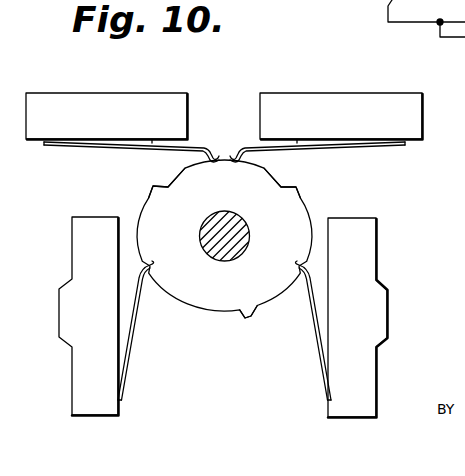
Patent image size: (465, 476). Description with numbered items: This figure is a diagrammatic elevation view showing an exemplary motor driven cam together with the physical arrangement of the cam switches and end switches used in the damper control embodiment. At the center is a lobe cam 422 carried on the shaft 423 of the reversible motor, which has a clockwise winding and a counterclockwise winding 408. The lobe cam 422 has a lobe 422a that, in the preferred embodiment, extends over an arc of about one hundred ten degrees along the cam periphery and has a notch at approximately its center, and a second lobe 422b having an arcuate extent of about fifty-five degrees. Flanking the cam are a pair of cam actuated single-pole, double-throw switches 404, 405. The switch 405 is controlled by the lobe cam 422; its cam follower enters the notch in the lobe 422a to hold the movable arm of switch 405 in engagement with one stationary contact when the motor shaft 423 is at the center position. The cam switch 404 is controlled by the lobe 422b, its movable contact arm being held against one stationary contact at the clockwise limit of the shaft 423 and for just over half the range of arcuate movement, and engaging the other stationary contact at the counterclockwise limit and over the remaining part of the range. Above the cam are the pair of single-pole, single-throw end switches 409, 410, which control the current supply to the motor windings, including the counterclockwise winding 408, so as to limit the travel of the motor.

The cam actuated single-pole, double-throw switch 404 is at (77, 256).
The cam actuated single-pole, double-throw switch 405 is at (366, 269).
The counterclockwise winding 408 is at (426, 18).
The end switch 409 is at (109, 101).
The end switch 410 is at (327, 101).
The lobe cam 422 is at (213, 311).
The lobe 422a is at (305, 209).
The lobe 422b is at (146, 204).
The shaft 423 is at (225, 211).